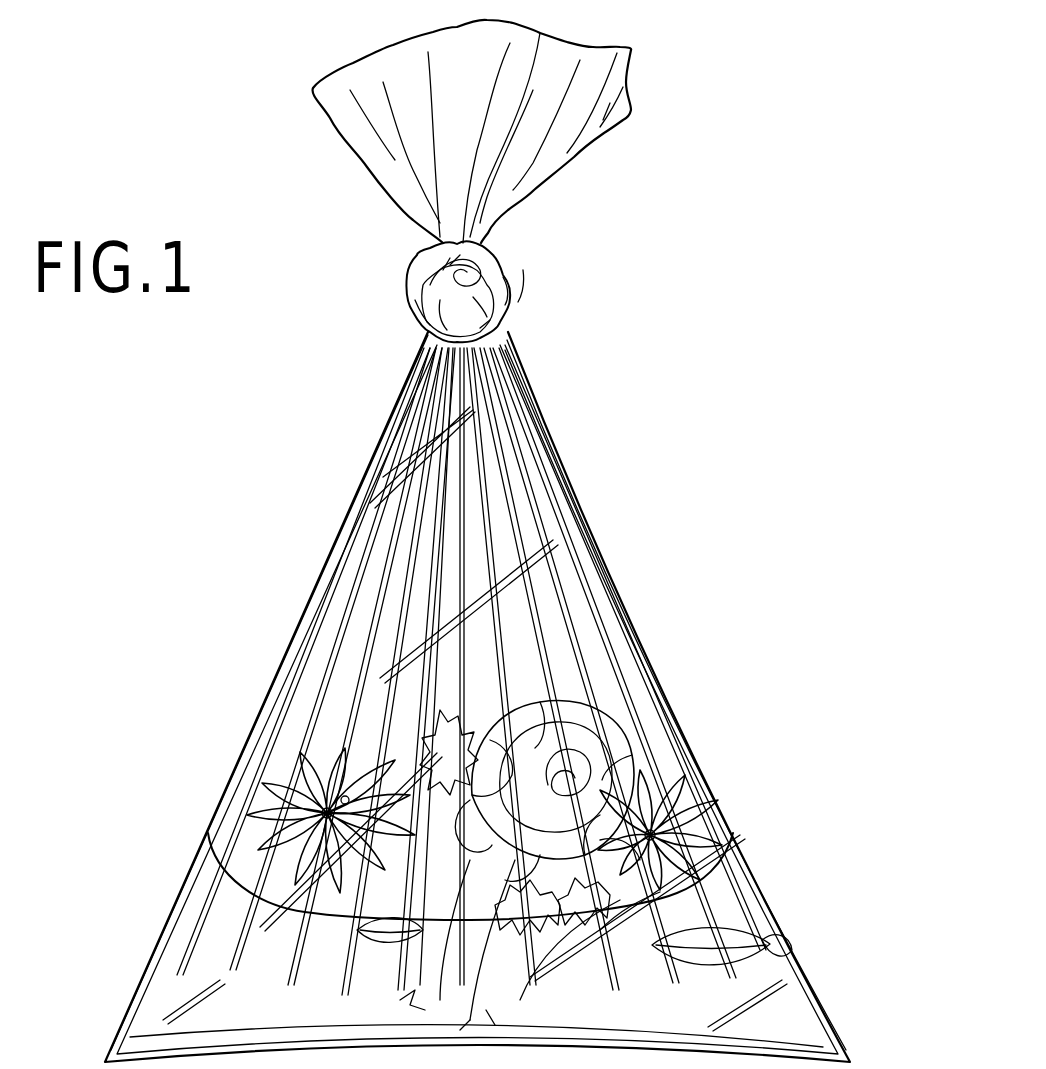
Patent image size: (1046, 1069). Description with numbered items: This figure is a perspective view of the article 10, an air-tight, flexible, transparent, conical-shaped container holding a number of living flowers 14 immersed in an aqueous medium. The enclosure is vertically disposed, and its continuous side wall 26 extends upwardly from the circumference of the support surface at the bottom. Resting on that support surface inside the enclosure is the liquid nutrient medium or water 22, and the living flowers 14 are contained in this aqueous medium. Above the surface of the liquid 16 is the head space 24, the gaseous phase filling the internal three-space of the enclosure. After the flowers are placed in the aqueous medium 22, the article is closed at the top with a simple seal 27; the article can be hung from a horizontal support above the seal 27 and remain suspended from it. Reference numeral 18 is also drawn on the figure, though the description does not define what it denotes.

The article 10 is at (316, 570).
The living flowers 14 is at (272, 788).
The surface of the liquid 16 is at (217, 853).
The side wall of bag 18 is at (400, 392).
The liquid nutrient medium or water 22 is at (213, 967).
The head space 24 is at (517, 613).
The side wall 26 is at (528, 457).
The seal 27 is at (425, 270).